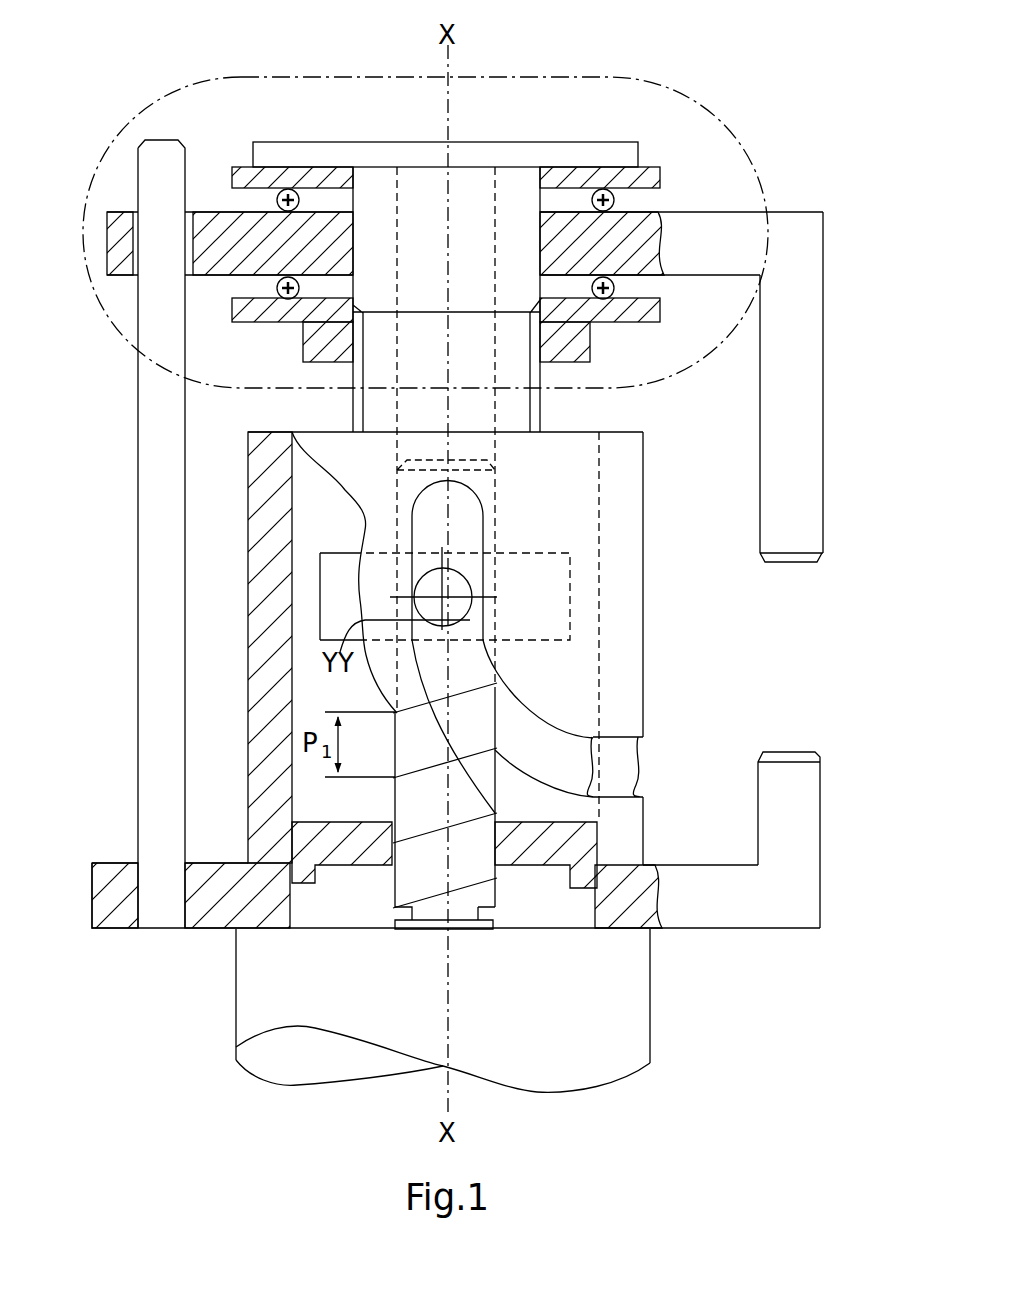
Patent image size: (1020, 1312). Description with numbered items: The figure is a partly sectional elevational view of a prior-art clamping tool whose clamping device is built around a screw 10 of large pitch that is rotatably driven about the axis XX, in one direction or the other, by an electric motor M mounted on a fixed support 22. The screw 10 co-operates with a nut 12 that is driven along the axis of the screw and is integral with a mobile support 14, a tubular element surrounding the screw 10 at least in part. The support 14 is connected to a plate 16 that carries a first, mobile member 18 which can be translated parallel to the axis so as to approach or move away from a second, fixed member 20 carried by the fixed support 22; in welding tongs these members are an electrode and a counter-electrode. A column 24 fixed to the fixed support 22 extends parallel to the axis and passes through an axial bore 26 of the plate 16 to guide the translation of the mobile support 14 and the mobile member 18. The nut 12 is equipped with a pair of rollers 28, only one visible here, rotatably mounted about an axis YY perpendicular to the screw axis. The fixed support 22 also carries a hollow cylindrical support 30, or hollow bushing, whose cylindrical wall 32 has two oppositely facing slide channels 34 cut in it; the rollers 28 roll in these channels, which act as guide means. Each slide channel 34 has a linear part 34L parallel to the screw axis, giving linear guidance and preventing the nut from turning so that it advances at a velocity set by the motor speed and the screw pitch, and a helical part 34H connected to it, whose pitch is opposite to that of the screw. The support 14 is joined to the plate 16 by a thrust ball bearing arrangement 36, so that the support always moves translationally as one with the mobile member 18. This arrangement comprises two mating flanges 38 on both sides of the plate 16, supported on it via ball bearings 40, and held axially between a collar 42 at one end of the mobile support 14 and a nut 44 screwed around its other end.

The screw 10 is at (390, 800).
The nut 12 is at (316, 577).
The support 14 is at (348, 418).
The plate 16 is at (742, 210).
The first member 18 is at (800, 528).
The second member 20 is at (782, 776).
The fixed support 22 is at (692, 938).
The column 24 is at (135, 497).
The axial bore 26 is at (134, 252).
The rollers 28 is at (484, 628).
The hollow cylindrical support 30 is at (245, 787).
The cylindrical wall 32 is at (262, 722).
The slide channels 34 is at (496, 692).
The linear part 34L is at (484, 522).
The helical part 34H is at (520, 708).
The thrust ball bearing arrangement 36 is at (691, 96).
The mating flanges 38 is at (660, 178).
The ball bearings 40 is at (272, 189).
The collar 42 is at (333, 150).
The nut 44 is at (304, 336).
The electric motor M is at (653, 1028).